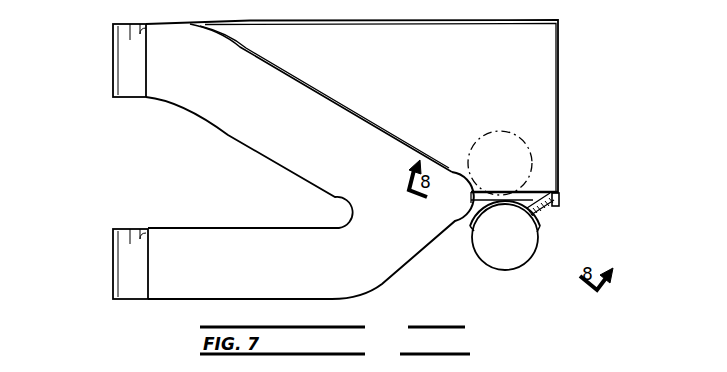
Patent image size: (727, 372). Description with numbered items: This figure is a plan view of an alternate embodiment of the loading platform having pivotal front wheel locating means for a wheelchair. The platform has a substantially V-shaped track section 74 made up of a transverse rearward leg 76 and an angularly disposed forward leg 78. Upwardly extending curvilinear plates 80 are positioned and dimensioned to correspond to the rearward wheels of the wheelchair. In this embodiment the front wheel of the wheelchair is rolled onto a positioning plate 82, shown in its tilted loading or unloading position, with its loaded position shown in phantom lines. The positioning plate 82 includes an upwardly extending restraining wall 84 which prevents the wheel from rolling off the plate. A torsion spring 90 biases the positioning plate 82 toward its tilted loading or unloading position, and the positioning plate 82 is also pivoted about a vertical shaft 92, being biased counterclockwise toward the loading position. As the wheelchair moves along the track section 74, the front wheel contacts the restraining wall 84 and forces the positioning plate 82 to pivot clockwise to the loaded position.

The track section 74 is at (413, 232).
The transverse rearward leg 76 is at (193, 283).
The angularly disposed forward leg 78 is at (340, 99).
The curvilinear plates 80 is at (125, 68).
The positioning plate 82 is at (512, 258).
The restraining wall 84 is at (540, 235).
The torsion spring 90 is at (548, 216).
The vertical shaft 92 is at (560, 199).